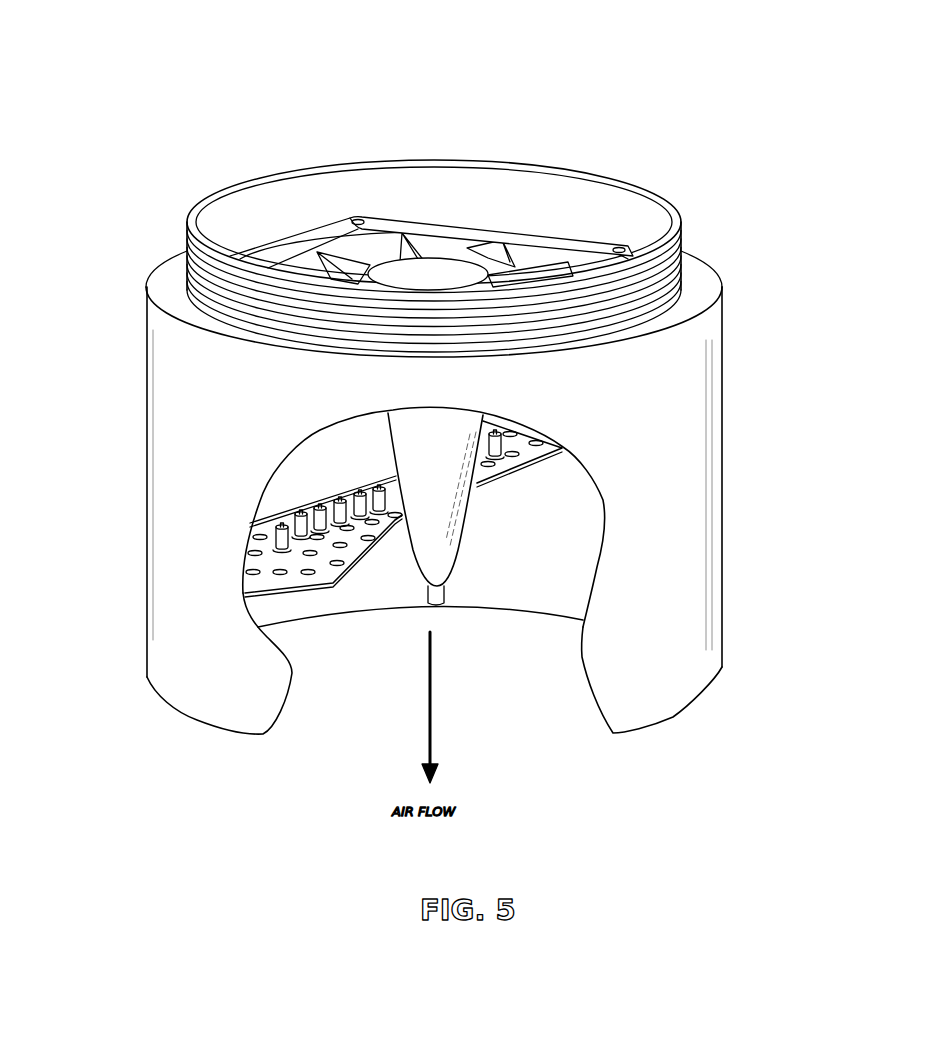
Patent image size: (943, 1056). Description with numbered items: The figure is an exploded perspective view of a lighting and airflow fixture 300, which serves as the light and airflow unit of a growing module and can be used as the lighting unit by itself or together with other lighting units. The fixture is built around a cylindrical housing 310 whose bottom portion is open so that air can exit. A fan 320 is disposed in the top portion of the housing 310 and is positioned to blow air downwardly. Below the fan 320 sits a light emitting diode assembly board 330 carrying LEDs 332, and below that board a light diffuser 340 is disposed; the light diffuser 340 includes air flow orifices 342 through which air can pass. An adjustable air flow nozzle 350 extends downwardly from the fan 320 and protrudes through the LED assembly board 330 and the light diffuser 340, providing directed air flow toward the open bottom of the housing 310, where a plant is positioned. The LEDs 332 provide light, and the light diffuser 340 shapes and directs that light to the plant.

The lighting and airflow fixture 300 is at (651, 888).
The housing 310 is at (697, 418).
The fan 320 is at (460, 267).
The light emitting diode (LED) assembly board 330 is at (295, 433).
The LEDs 332 is at (295, 510).
The light diffuser 340 is at (300, 585).
The air flow orifices 342 is at (240, 547).
The adjustable air flow nozzle 350 is at (458, 482).